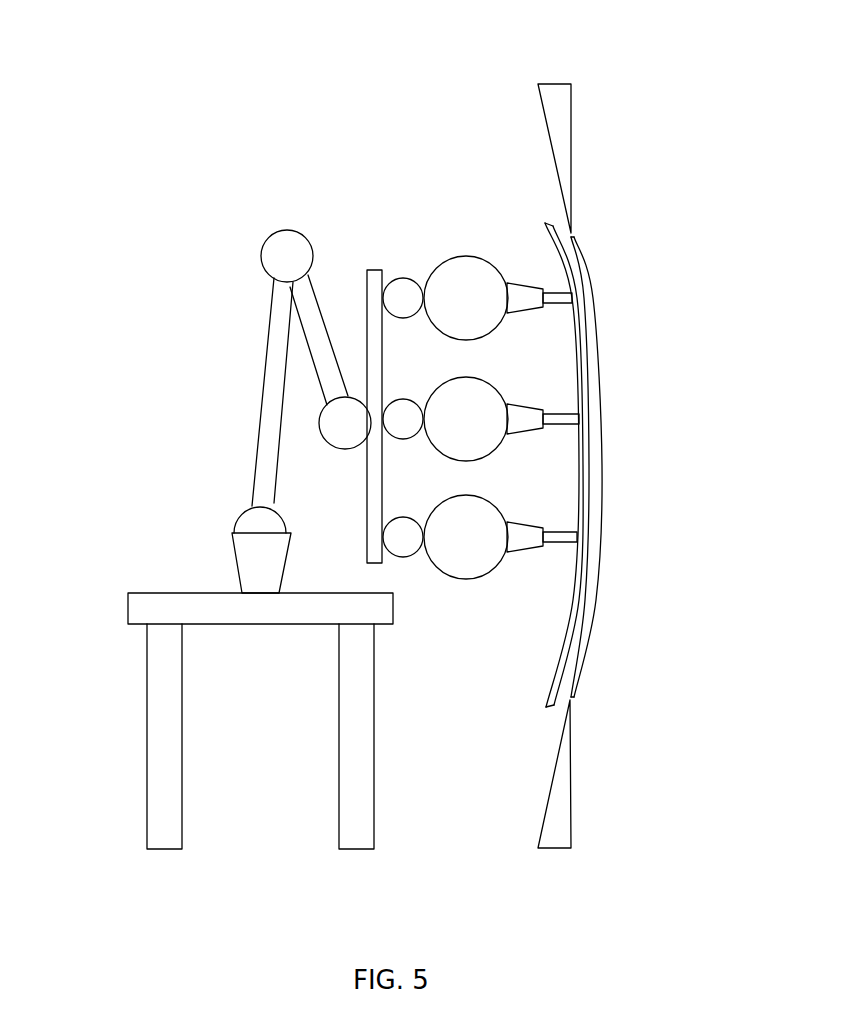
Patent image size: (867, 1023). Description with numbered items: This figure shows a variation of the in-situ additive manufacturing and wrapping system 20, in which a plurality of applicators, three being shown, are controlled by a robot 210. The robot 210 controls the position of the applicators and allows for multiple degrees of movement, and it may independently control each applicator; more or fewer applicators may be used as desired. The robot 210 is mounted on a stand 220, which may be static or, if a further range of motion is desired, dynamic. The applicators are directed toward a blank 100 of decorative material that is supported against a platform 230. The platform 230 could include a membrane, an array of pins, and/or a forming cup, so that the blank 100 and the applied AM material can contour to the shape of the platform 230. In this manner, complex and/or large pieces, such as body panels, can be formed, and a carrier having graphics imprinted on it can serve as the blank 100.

The in-situ AM and wrapping system 20 is at (639, 58).
The blank 100 is at (543, 706).
The robot 210 is at (253, 392).
The stand 220 is at (145, 721).
The platform 230 is at (536, 841).